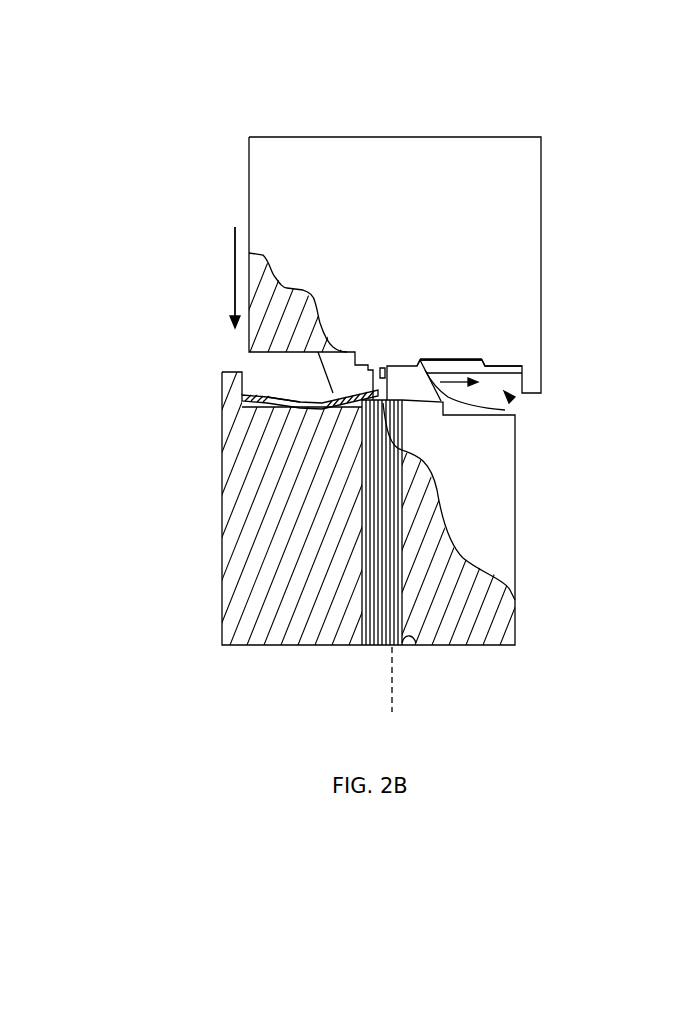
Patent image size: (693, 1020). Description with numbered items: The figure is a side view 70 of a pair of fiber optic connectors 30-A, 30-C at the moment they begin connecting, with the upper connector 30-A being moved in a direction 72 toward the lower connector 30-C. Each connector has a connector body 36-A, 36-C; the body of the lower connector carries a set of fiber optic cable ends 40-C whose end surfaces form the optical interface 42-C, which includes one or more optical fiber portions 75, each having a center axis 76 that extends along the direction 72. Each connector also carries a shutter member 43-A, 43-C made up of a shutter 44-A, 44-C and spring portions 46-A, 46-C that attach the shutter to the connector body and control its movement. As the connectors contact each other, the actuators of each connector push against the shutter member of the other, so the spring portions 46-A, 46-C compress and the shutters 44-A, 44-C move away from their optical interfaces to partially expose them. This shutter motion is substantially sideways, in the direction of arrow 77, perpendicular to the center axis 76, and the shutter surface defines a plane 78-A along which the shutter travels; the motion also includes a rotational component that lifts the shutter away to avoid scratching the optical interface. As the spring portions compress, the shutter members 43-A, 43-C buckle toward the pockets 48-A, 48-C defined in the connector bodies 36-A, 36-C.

The side view 70 is at (272, 78).
The fiber optic connector 30-A is at (418, 132).
The connector body 36-A is at (268, 187).
The direction 72 is at (234, 275).
The pocket 48-A is at (422, 360).
The arrow 77 is at (455, 378).
The spring portions 46-A is at (482, 365).
The plane 78-A is at (557, 387).
The shutter member 43-A is at (505, 410).
The shutter 44-A is at (515, 403).
The fiber optic connector 30-C is at (310, 665).
The connector body 36-C is at (242, 610).
The optical interface 42-C is at (363, 405).
The fiber optic cable ends 40-C is at (402, 622).
The optical fiber portion 75 is at (412, 637).
The center axis 76 is at (392, 708).
The shutter member 43-C is at (135, 332).
The shutter 44-C is at (312, 395).
The spring portions 46-C is at (302, 395).
The pocket 48-C is at (287, 407).